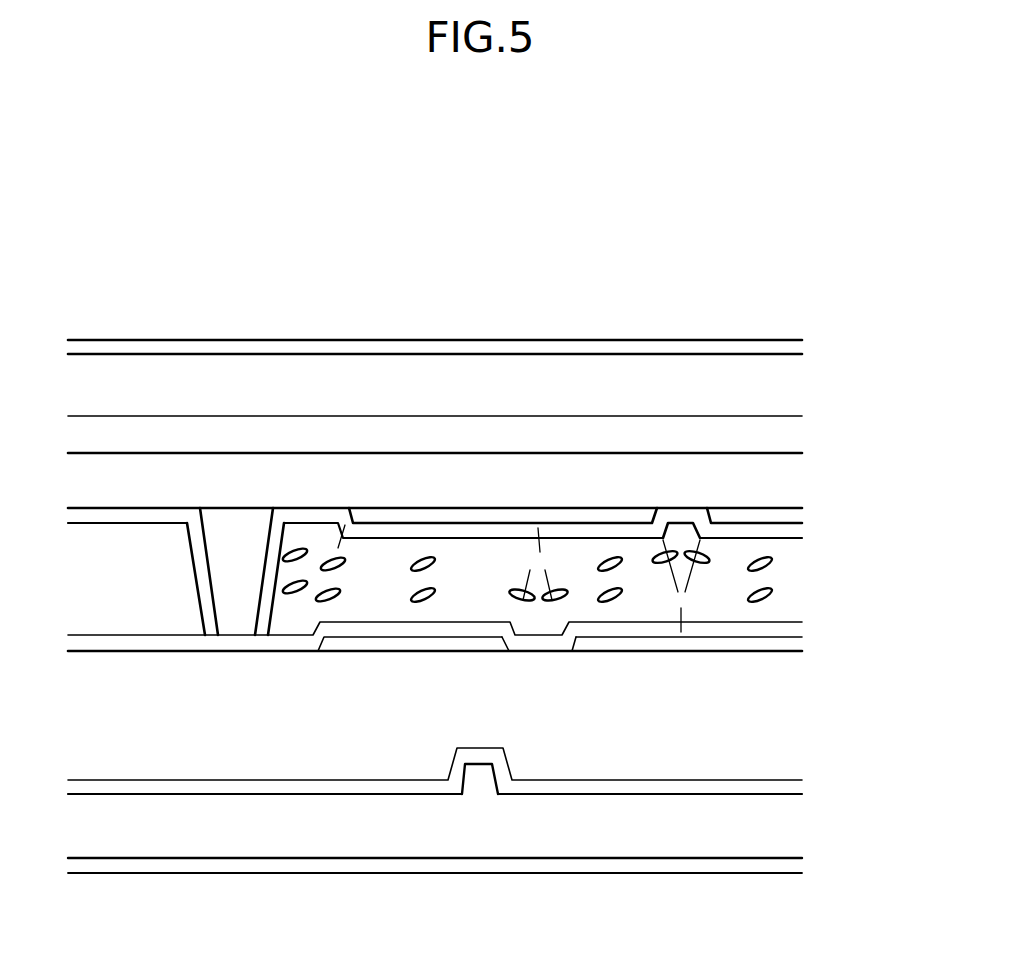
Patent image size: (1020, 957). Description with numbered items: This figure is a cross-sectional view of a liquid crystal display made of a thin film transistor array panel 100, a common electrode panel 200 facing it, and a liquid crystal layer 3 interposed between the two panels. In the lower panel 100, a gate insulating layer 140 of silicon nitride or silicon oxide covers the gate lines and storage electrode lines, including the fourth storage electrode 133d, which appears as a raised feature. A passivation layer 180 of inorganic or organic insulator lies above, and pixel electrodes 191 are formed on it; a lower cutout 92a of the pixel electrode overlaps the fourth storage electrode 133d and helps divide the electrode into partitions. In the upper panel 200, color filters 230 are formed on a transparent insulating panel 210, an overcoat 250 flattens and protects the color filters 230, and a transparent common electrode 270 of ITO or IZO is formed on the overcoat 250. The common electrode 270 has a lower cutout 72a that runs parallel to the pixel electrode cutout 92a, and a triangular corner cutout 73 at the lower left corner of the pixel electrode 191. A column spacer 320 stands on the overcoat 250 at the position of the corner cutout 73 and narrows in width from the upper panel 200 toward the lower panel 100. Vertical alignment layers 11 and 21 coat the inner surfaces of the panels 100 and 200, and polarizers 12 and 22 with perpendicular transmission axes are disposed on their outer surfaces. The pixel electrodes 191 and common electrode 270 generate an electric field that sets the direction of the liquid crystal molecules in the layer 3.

The polarizer 22 is at (783, 347).
The insulating panel 210 is at (607, 382).
The color filter 230 is at (525, 440).
The overcoat 250 is at (378, 485).
The common electrode 270 is at (455, 515).
The alignment layer 21 is at (768, 532).
The lower cutout 72a is at (705, 512).
The corner cutout 73 is at (350, 515).
The column spacer 320 is at (232, 540).
The liquid crystal layer 3 is at (816, 541).
The common electrode panel 200 is at (816, 356).
The pixel electrode 191 is at (392, 645).
The lower cutout 92a is at (570, 643).
The alignment layer 11 is at (138, 645).
The passivation layer 180 is at (720, 718).
The fourth storage electrode 133d is at (478, 780).
The gate insulating layer 140 is at (273, 787).
The thin film transistor array panel 100 is at (816, 639).
The polarizer 12 is at (783, 868).